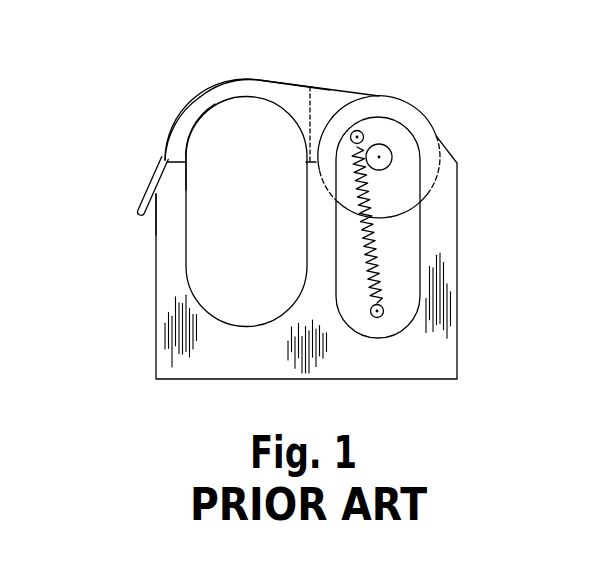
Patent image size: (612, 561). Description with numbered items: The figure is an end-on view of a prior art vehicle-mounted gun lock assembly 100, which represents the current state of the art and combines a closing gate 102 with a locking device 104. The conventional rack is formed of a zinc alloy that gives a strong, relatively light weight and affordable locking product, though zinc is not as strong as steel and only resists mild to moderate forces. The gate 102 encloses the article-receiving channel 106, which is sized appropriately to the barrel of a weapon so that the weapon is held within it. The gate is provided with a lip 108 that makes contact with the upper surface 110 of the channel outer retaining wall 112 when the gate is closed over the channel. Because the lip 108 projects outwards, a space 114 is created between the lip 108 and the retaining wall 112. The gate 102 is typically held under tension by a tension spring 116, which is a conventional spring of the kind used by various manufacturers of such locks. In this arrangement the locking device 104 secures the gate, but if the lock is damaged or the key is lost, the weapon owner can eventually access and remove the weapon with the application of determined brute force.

The gun lock assembly 100 is at (155, 333).
The closing gate 102 is at (283, 83).
The locking device 104 is at (432, 185).
The article-receiving channel 106 is at (196, 229).
The lip 108 is at (147, 198).
The upper surface 110 is at (165, 157).
The channel outer retaining wall 112 is at (180, 190).
The space 114 is at (150, 223).
The tension spring 116 is at (380, 252).